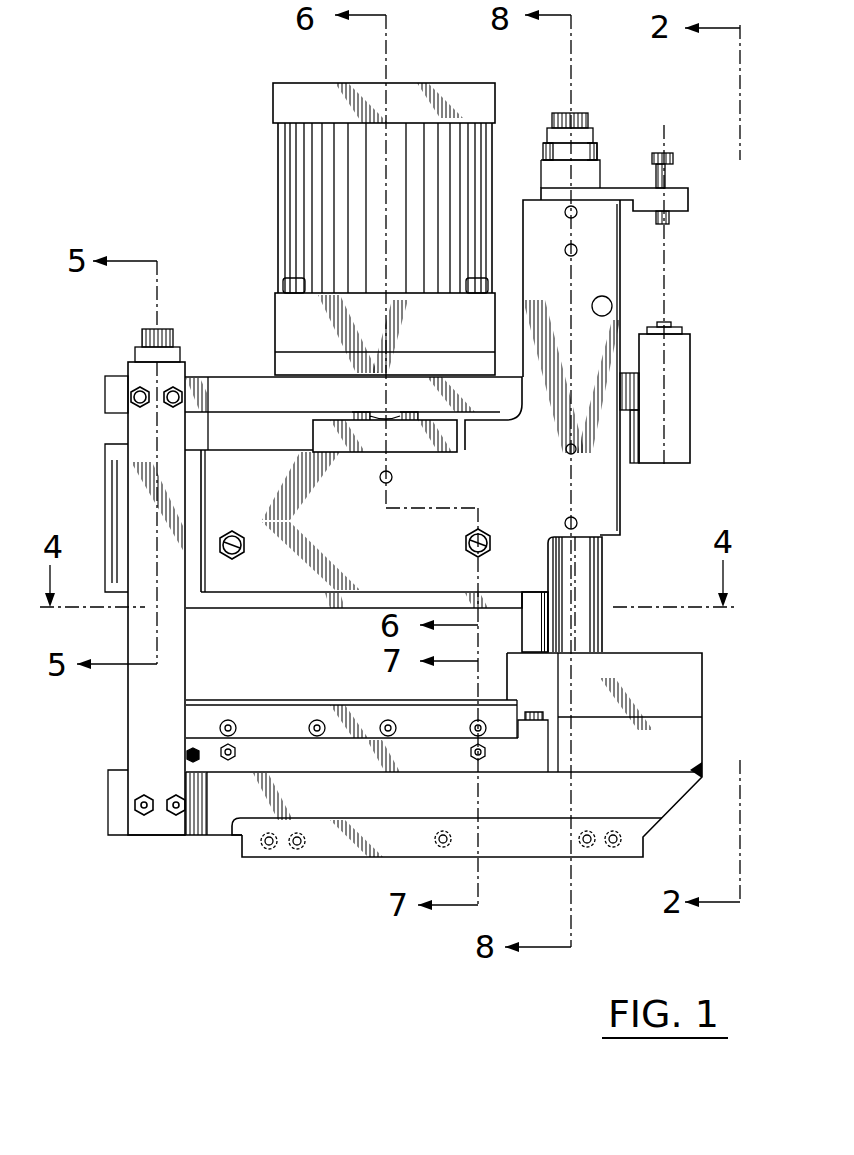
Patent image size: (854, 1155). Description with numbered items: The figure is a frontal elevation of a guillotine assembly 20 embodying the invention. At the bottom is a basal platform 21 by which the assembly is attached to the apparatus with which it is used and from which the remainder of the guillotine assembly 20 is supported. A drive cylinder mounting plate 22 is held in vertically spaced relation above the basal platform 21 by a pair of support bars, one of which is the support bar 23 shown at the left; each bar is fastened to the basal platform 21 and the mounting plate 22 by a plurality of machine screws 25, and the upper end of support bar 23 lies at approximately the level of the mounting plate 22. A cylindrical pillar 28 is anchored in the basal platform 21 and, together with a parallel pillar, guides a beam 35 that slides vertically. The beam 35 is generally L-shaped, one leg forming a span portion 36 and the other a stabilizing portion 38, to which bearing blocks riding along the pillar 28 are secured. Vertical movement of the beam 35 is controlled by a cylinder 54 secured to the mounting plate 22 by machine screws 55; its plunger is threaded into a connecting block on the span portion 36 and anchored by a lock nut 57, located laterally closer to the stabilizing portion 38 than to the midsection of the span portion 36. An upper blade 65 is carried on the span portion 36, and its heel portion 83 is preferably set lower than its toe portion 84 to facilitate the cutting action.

The guillotine assembly 20 is at (138, 113).
The basal platform 21 is at (665, 798).
The drive cylinder mounting plate 22 is at (264, 385).
The support bar 23 is at (147, 727).
The machine screws 25 is at (137, 390).
The cylindrical pillar 28 is at (583, 586).
The beam 35 is at (308, 578).
The span portion 36 is at (377, 578).
The stabilizing portion 38 is at (597, 280).
The cylinder 54 is at (287, 188).
The machine screws 55 is at (285, 290).
The lock nut 57 is at (382, 412).
The upper blade 65 is at (366, 620).
The heel portion 83 is at (517, 618).
The toe portion 84 is at (200, 605).